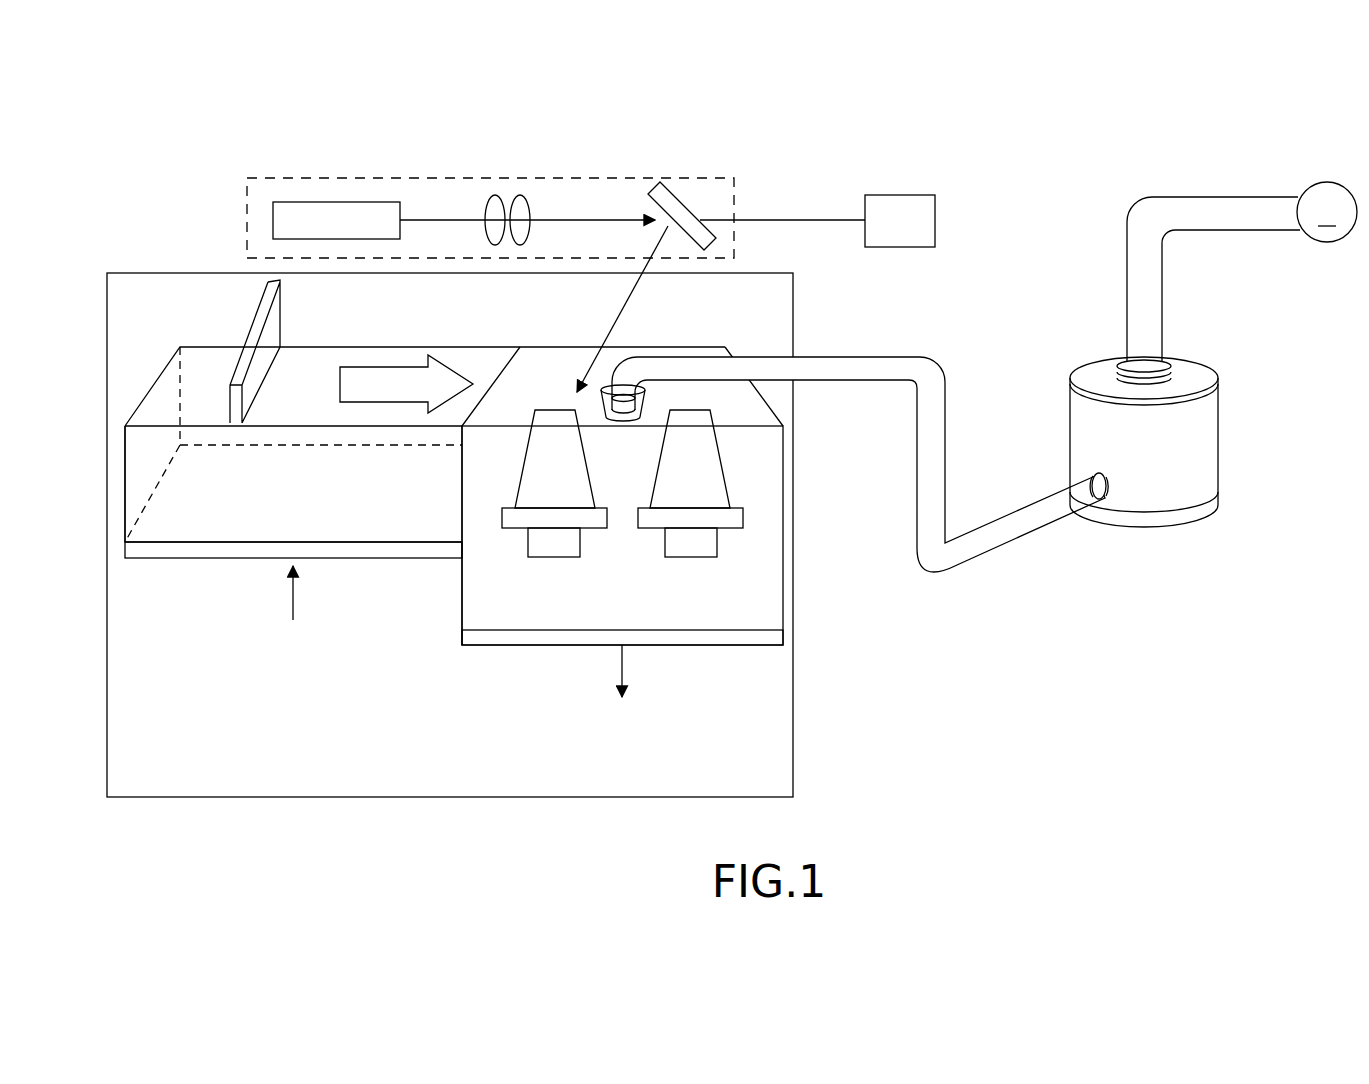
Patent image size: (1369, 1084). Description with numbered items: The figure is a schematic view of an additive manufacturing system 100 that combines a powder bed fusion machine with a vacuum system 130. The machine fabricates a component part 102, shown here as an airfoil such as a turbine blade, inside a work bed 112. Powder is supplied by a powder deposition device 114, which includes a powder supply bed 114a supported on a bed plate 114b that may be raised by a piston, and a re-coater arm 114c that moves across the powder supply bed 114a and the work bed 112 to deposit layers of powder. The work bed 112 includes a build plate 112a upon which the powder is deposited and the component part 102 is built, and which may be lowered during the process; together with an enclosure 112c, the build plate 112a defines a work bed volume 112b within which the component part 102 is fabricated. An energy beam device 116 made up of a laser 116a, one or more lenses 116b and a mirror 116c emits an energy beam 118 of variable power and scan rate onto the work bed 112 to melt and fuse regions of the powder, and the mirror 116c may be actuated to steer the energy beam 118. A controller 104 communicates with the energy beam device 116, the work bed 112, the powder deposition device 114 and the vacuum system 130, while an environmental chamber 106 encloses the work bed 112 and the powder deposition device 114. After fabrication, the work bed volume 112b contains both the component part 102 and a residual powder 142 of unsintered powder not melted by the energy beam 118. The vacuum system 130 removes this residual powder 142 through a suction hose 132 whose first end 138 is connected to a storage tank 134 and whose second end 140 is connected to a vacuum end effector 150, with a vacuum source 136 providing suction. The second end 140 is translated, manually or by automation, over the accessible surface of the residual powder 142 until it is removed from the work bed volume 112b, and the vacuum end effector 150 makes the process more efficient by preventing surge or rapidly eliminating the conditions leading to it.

The additive manufacturing system 100 is at (143, 182).
The component part 102 is at (695, 549).
The controller 104 is at (910, 247).
The environmental chamber 106 is at (793, 757).
The work bed 112 is at (437, 634).
The build plate 112a is at (765, 637).
The work bed volume 112b is at (604, 583).
The enclosure 112c is at (460, 570).
The powder deposition device 114 is at (177, 570).
The powder supply bed 114a is at (168, 508).
The bed plate 114b is at (242, 548).
The re-coater arm 114c is at (262, 300).
The energy beam device 116 is at (268, 178).
The laser 116a is at (373, 202).
The lenses 116b is at (520, 188).
The mirror 116c is at (688, 198).
The energy beam 118 is at (585, 218).
The vacuum system 130 is at (1120, 190).
The suction hose 132 is at (938, 378).
The storage tank 134 is at (1185, 525).
The vacuum source 136 is at (1306, 185).
The first end 138 is at (1045, 513).
The second end 140 is at (618, 372).
The residual powder 142 is at (525, 607).
The vacuum end effector 150 is at (647, 404).